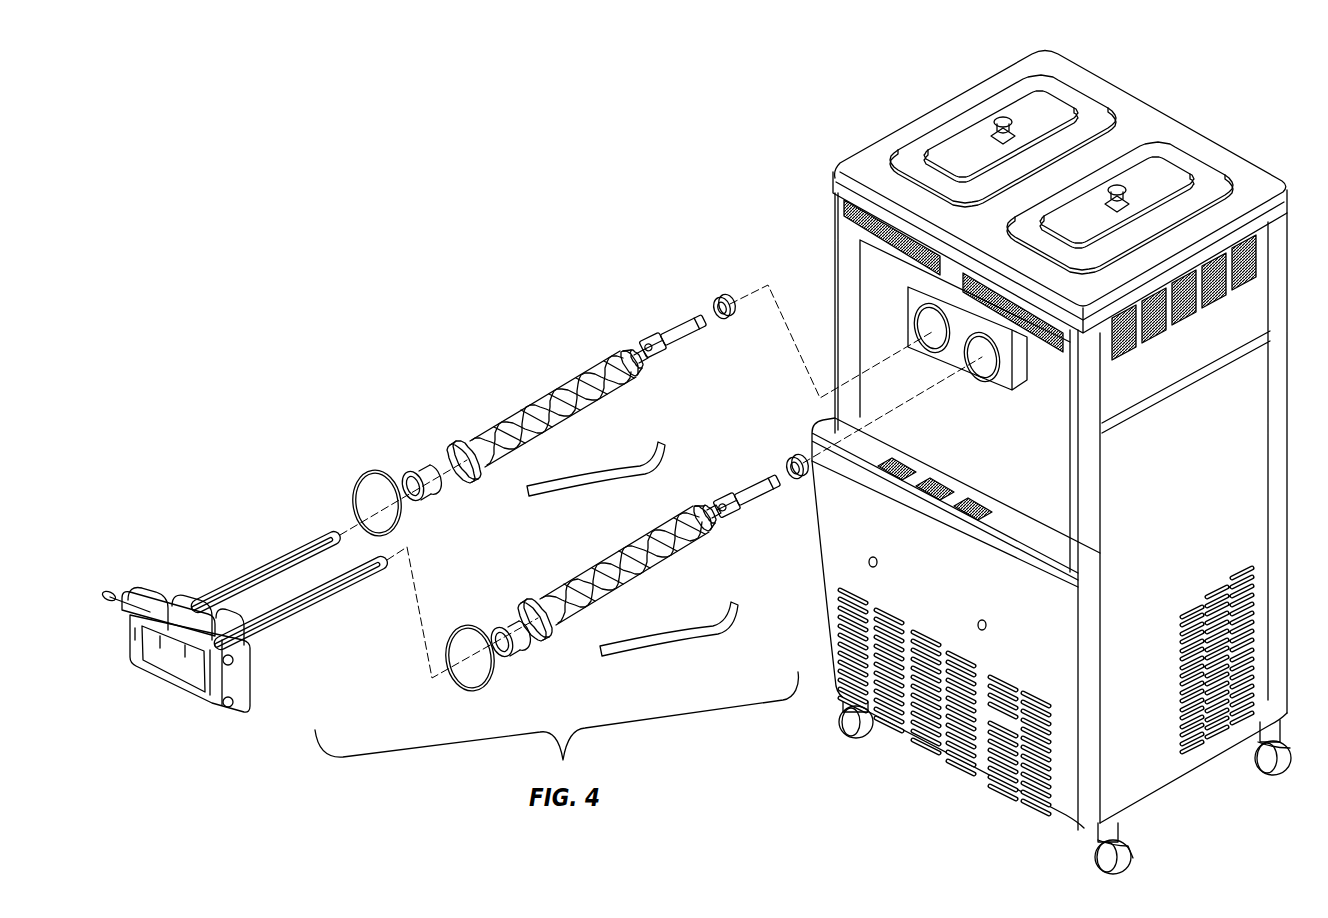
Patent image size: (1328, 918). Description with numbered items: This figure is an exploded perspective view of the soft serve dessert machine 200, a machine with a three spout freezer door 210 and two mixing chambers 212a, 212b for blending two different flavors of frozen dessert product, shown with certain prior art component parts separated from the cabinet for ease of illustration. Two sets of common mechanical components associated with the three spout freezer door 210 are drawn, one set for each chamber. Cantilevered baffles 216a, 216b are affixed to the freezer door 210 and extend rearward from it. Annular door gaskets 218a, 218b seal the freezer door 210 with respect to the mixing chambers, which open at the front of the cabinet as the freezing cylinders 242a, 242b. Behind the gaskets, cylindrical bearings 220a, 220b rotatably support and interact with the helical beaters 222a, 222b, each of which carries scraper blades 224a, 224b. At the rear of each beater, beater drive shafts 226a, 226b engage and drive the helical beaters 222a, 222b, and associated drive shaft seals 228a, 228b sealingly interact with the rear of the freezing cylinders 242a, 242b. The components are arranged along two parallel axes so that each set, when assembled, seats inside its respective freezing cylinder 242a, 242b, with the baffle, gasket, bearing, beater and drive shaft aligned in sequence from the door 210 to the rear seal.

The soft serve dessert machine 200 is at (735, 113).
The three spout freezer door 210 is at (193, 672).
The mixing chamber 212a is at (1097, 113).
The mixing chamber 212b is at (1212, 180).
The cantilevered baffle 216a is at (292, 553).
The cantilevered baffle 216b is at (340, 597).
The annular door gasket 218a is at (365, 472).
The annular door gasket 218b is at (460, 623).
The cylindrical bearing 220a is at (411, 465).
The cylindrical bearing 220b is at (500, 623).
The helical beater 222a is at (542, 393).
The helical beater 222b is at (647, 537).
The scraper blade 224a is at (663, 462).
The scraper blade 224b is at (733, 618).
The beater drive shaft 226a is at (670, 326).
The beater drive shaft 226b is at (767, 497).
The drive shaft seal 228a is at (723, 302).
The drive shaft seal 228b is at (790, 462).
The freezing cylinder 242a is at (930, 318).
The freezing cylinder 242b is at (983, 363).